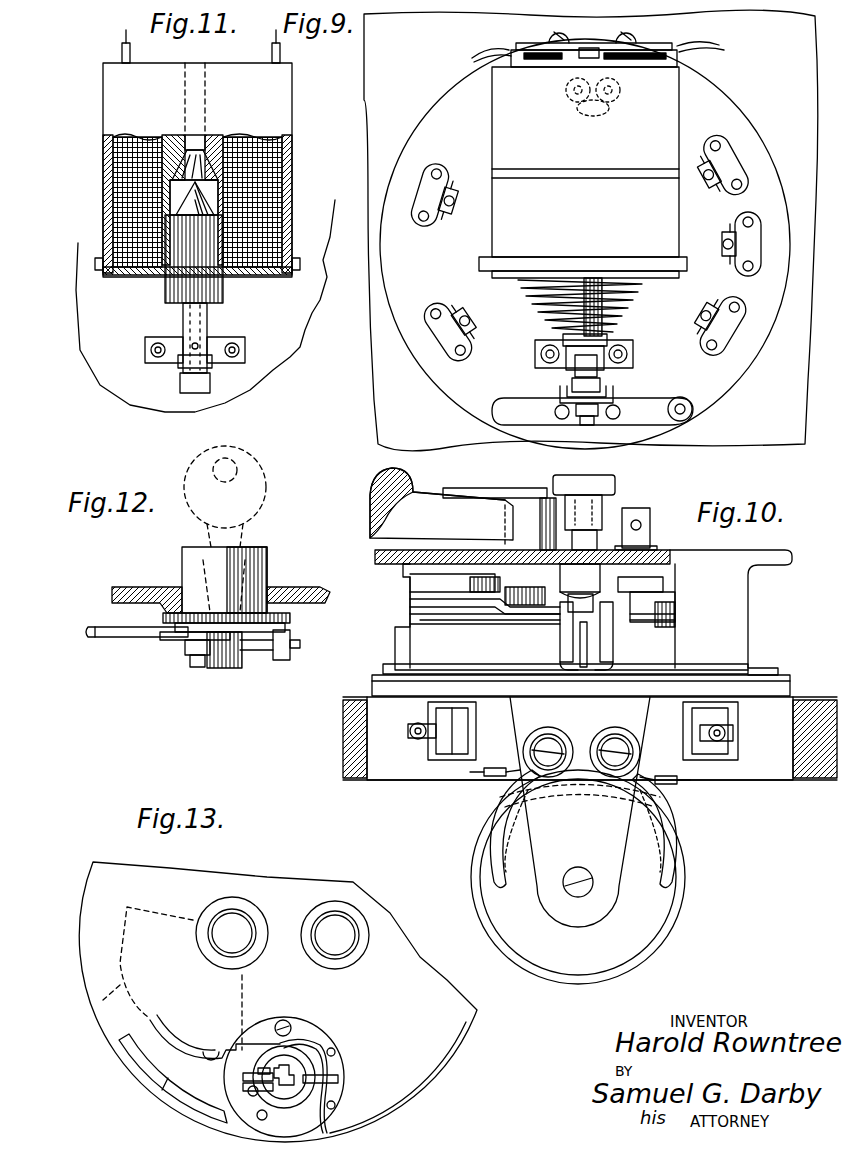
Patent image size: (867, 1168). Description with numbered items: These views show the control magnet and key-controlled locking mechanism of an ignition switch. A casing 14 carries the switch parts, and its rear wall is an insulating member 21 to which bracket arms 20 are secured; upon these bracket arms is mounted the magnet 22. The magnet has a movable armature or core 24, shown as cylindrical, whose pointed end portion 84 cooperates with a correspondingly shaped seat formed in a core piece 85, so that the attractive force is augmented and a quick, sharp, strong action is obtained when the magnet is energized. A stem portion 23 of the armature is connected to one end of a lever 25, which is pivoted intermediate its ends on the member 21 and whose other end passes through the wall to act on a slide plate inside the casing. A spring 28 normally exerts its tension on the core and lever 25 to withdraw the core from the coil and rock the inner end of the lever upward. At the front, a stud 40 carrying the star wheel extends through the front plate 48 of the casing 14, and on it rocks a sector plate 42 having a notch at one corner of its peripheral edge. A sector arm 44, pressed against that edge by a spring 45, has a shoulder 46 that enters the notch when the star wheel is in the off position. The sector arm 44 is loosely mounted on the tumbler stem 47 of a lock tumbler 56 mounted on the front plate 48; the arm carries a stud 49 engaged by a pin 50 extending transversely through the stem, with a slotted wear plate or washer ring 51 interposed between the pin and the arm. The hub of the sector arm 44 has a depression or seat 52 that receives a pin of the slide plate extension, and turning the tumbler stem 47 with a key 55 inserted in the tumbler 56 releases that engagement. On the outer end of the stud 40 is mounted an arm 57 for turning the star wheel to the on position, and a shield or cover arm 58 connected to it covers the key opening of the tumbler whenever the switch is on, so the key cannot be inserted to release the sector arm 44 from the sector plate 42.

In FIG. 10, the casing 14 is at (748, 615).
In FIG. 10, the bracket arms 20 is at (600, 908).
In FIG. 10, the insulating member 21 is at (372, 683).
In FIG. 11, the magnet 22 is at (295, 140).
In FIG. 9, the magnet 22 is at (492, 138).
In FIG. 10, the magnet 22 is at (666, 890).
In FIG. 9, the stem portion 23 is at (566, 322).
In FIG. 11, the movable armature or core 24 is at (228, 292).
In FIG. 9, the movable armature or core 24 is at (526, 284).
In FIG. 9, the lever 25 is at (575, 368).
In FIG. 9, the spring 28 is at (620, 309).
In FIG. 10, the stud 40 is at (555, 545).
In FIG. 13, the stud 40 is at (228, 938).
In FIG. 10, the sector plate 42 is at (455, 600).
In FIG. 13, the sector plate 42 is at (120, 1005).
In FIG. 12, the sector arm 44 is at (125, 640).
In FIG. 13, the sector arm 44 is at (182, 1065).
In FIG. 13, the spring 45 is at (330, 1046).
In FIG. 13, the shoulder 46 is at (203, 1047).
In FIG. 12, the tumbler stem 47 is at (232, 668).
In FIG. 13, the tumbler stem 47 is at (270, 1065).
In FIG. 12, the front plate 48 is at (133, 590).
In FIG. 10, the front plate 48 is at (652, 556).
In FIG. 13, the front plate 48 is at (278, 1002).
In FIG. 12, the stud 49 is at (190, 668).
In FIG. 13, the stud 49 is at (245, 1092).
In FIG. 12, the pin 50 is at (185, 655).
In FIG. 13, the pin 50 is at (338, 1080).
In FIG. 12, the wear plate or washer ring 51 is at (180, 640).
In FIG. 13, the depression or seat 52 is at (260, 1120).
In FIG. 12, the key 55 is at (268, 487).
In FIG. 12, the tumbler 56 is at (182, 552).
In FIG. 10, the arm 57 is at (427, 493).
In FIG. 10, the shield or cover arm 58 is at (494, 490).
In FIG. 11, the pointed end portion 84 is at (105, 196).
In FIG. 11, the core piece 85 is at (206, 137).